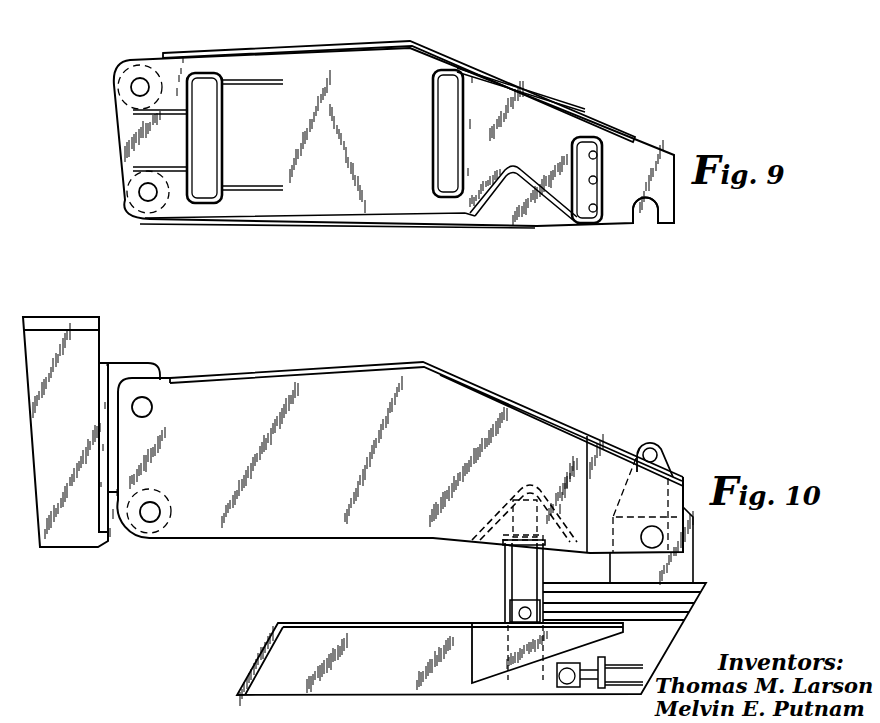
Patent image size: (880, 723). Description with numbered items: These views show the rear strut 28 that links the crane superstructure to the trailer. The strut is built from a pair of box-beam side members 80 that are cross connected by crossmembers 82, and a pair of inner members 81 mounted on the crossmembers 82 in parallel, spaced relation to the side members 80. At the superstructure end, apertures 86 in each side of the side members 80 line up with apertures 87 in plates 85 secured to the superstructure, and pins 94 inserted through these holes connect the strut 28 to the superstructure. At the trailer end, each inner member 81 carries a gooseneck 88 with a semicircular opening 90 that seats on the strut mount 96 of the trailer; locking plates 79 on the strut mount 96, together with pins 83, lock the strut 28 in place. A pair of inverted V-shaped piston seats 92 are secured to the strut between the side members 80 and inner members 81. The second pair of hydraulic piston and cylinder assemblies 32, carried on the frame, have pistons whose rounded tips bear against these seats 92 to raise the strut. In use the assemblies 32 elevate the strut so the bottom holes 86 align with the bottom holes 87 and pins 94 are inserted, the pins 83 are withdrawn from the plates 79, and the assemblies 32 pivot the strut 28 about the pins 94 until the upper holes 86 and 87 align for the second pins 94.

In FIG. 9, the rear strut 28 is at (493, 66).
In FIG. 10, the rear strut 28 is at (237, 362).
In FIG. 10, the hydraulic piston and cylinder assemblies 32 is at (499, 571).
In FIG. 10, the plates 79 is at (650, 447).
In FIG. 10, the side members 80 is at (310, 369).
In FIG. 9, the inner members 81 is at (517, 93).
In FIG. 9, the crossmembers 82 is at (222, 138).
In FIG. 10, the pins 83 is at (657, 455).
In FIG. 10, the plates 85 is at (133, 372).
In FIG. 9, the apertures 86 is at (131, 85).
In FIG. 10, the apertures 87 is at (152, 404).
In FIG. 9, the gooseneck 88 is at (667, 153).
In FIG. 10, the gooseneck 88 is at (602, 452).
In FIG. 9, the semicircular opening 90 is at (655, 210).
In FIG. 9, the piston seats 92 is at (543, 178).
In FIG. 10, the piston seats 92 is at (528, 480).
In FIG. 10, the pins 94 is at (153, 516).
In FIG. 10, the strut mount 96 is at (700, 572).